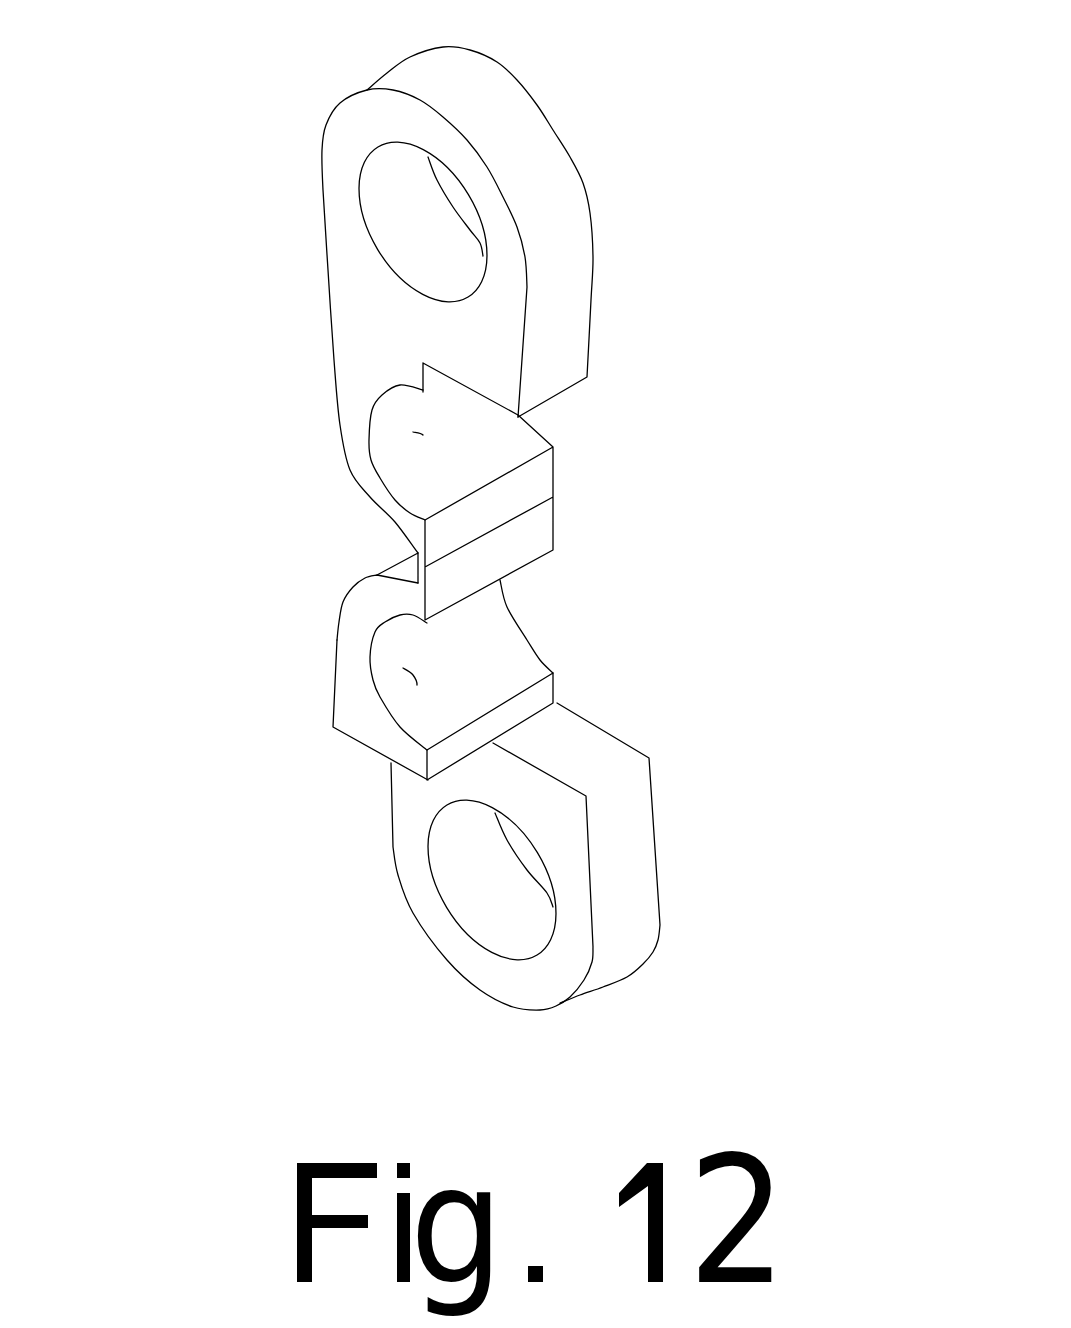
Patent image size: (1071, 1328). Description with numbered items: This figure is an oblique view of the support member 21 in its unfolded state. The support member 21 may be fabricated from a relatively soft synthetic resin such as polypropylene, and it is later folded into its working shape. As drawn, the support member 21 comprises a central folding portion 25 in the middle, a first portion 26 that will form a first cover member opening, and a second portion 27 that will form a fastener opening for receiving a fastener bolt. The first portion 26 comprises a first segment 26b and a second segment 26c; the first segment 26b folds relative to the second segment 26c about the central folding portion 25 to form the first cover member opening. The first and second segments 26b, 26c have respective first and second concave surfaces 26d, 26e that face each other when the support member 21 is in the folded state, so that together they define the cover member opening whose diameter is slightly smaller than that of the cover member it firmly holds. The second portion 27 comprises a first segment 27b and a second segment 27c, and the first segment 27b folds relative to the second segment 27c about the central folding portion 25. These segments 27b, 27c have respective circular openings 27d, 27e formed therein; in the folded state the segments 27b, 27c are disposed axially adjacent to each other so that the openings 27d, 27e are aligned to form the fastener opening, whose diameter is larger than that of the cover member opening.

The support member 21 is at (152, 95).
The central folding portion 25 is at (408, 553).
The first portion 26 is at (608, 478).
The first segment 26b is at (347, 395).
The second segment 26c is at (347, 669).
The first concave surface 26d is at (423, 435).
The second concave surface 26e is at (417, 685).
The second portion 27 is at (695, 725).
The first segment 27b is at (543, 143).
The second segment 27c is at (630, 935).
The circular opening 27d is at (398, 217).
The circular opening 27e is at (477, 900).